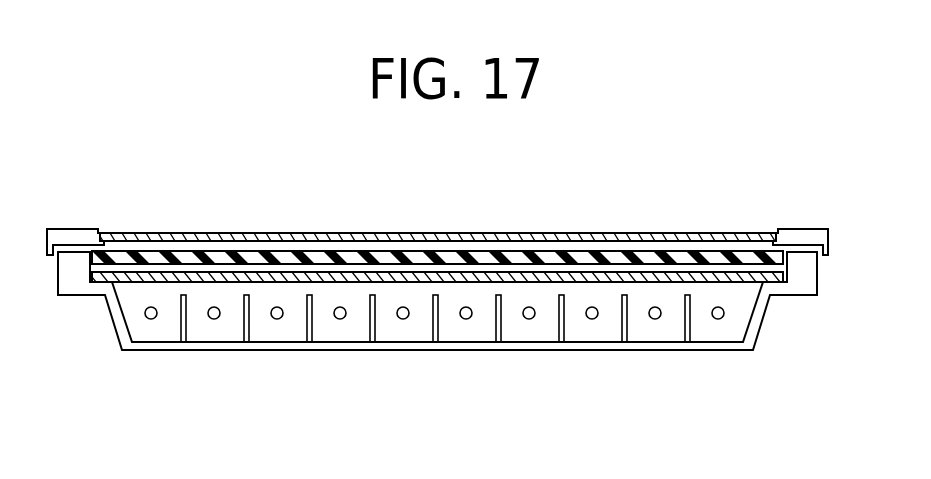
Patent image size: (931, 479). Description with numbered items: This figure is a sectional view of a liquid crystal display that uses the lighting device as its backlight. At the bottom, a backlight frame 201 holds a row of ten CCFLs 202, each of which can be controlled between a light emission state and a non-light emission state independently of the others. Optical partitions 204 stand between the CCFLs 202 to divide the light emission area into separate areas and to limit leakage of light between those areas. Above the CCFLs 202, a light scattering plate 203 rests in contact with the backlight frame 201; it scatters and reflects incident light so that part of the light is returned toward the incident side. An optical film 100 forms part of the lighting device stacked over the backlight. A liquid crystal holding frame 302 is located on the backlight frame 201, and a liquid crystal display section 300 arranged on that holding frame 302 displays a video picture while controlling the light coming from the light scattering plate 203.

The optical film 100 is at (150, 268).
The backlight frame 201 is at (223, 352).
The CCFLs 202 is at (339, 319).
The light scattering plate 203 is at (273, 252).
The optical partitions 204 is at (437, 320).
The liquid crystal display section 300 is at (372, 232).
The liquid crystal holding frame 302 is at (75, 228).